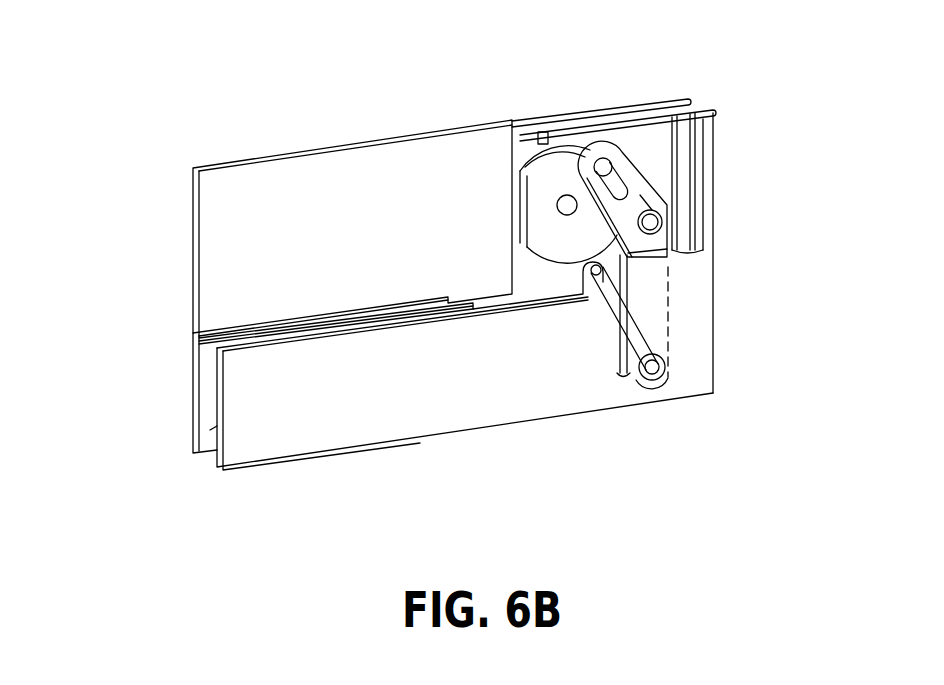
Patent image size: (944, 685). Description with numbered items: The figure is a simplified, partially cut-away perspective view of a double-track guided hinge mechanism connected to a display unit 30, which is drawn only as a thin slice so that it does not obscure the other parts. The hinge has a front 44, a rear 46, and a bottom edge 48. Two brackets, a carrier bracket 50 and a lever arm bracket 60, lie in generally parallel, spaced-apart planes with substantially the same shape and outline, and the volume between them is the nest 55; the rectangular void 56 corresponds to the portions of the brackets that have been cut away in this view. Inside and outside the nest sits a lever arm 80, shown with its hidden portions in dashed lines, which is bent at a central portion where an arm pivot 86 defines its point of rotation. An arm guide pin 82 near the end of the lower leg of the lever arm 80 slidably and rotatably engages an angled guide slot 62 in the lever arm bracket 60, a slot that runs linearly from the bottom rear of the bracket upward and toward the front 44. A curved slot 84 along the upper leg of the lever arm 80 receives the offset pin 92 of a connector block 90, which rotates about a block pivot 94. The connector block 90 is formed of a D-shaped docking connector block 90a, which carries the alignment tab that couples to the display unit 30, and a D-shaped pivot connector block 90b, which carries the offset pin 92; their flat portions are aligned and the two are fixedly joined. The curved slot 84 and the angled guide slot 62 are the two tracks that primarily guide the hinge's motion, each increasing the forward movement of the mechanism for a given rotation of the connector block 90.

The display unit 30 is at (237, 161).
The front of the hinge mechanism 44 is at (148, 263).
The rear of the hinge mechanism 46 is at (766, 186).
The bottom edge of the hinge mechanism 48 is at (426, 457).
The carrier bracket 50 is at (193, 368).
The nest 55 is at (204, 421).
The rectangular void 56 is at (658, 140).
The lever arm bracket 60 is at (365, 443).
The angled guide slot 62 is at (608, 312).
The lever arm 80 is at (650, 277).
The arm guide pin 82 is at (652, 368).
The curved slot 84 is at (637, 183).
The arm pivot 86 is at (653, 224).
The connector block 90 is at (550, 84).
The docking connector block 90a is at (523, 147).
The pivot connector block 90b is at (568, 160).
The offset pin 92 is at (603, 167).
The block pivot 94 is at (566, 205).